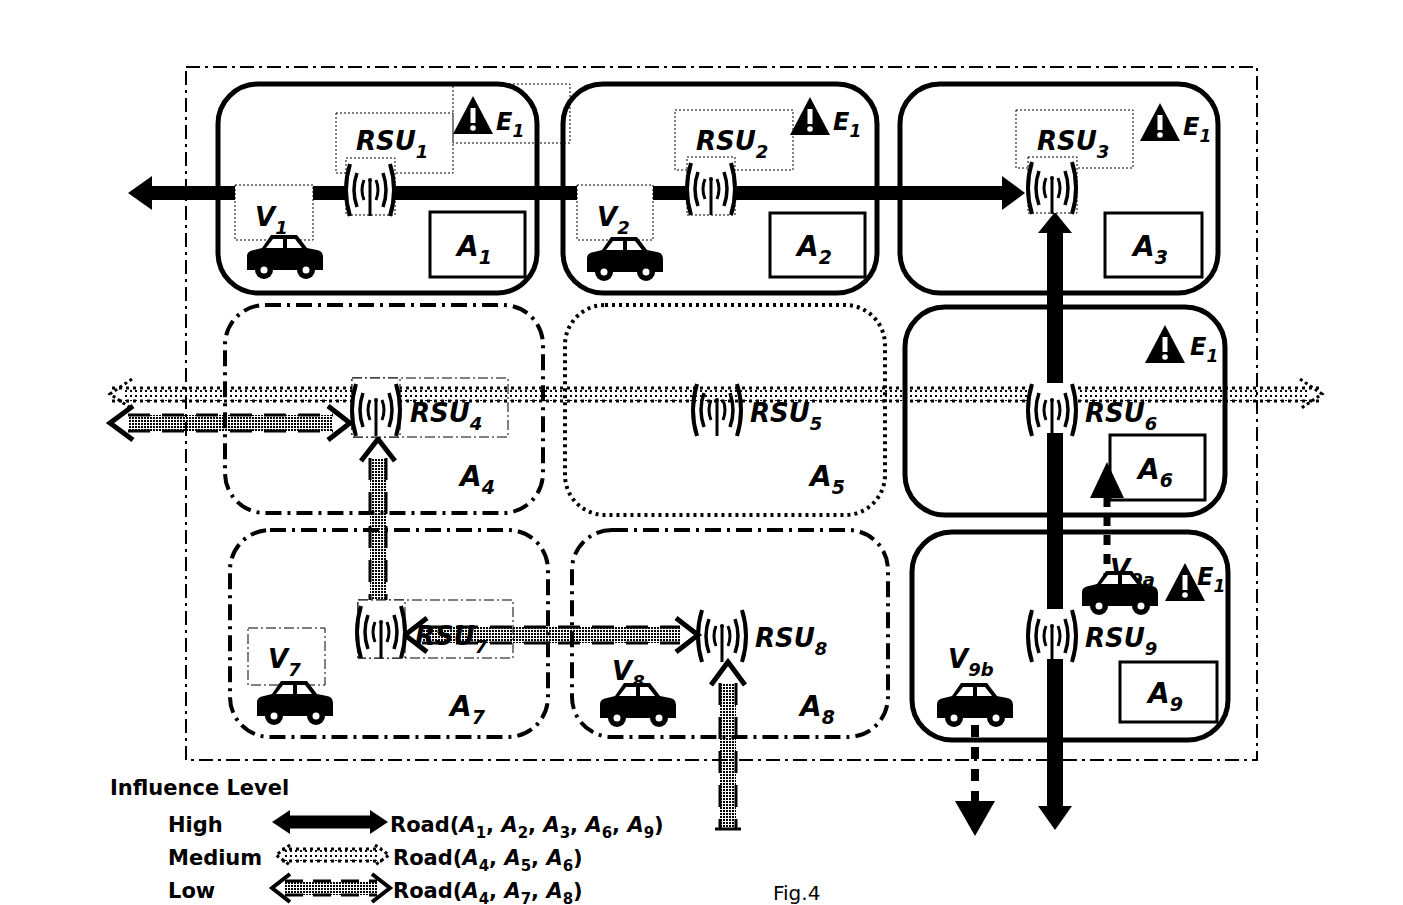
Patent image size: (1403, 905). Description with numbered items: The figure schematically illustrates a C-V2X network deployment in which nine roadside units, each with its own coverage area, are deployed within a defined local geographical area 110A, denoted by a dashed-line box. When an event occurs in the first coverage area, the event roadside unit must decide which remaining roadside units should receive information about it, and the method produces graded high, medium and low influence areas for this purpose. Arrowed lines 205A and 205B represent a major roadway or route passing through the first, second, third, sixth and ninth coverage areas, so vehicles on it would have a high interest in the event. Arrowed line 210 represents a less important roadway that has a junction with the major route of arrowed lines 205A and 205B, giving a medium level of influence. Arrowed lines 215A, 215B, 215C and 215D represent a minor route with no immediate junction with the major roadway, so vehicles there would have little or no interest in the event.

The defined local geographical area 110A is at (1258, 200).
The arrowed line representing a major roadway 205A is at (168, 203).
The arrowed line representing a major roadway 205B is at (1062, 783).
The arrowed line representing a minor roadway 210 is at (1288, 400).
The arrowed line representing a minor route 215A is at (207, 430).
The arrowed line representing a minor route 215B is at (373, 562).
The arrowed line representing a minor route 215C is at (628, 627).
The arrowed line representing a minor route 215D is at (738, 793).